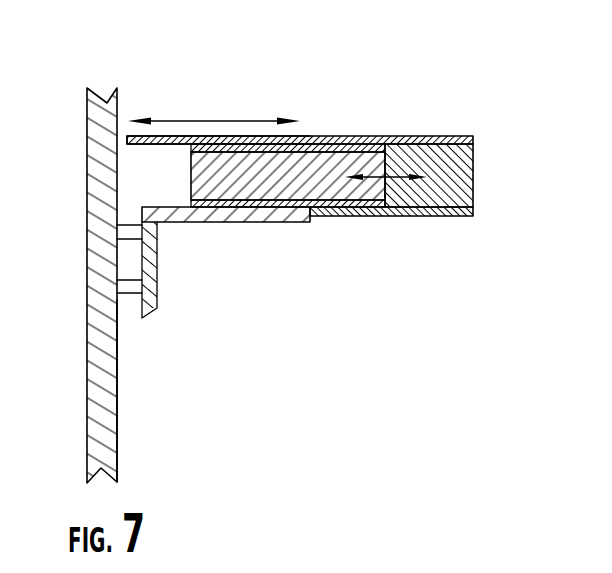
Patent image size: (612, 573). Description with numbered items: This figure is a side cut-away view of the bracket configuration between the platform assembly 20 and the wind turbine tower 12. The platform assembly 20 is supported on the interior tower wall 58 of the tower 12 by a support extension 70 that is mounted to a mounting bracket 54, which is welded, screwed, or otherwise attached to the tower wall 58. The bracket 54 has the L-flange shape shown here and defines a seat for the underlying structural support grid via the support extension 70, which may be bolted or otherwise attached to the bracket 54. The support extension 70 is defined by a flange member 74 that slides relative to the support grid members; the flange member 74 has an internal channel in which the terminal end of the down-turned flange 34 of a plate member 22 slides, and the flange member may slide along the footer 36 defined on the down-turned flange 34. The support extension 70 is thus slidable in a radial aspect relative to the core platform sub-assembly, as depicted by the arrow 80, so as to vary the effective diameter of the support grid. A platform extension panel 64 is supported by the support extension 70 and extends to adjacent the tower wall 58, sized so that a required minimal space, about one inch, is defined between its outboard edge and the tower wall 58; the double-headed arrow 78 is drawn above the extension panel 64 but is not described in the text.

The wind turbine tower 12 is at (87, 173).
The platform assembly 20 is at (337, 163).
The plate member 22 is at (322, 163).
The down-turned flange 34 is at (467, 177).
The footer 36 is at (442, 217).
The mounting bracket 54 is at (157, 257).
The tower wall 58 is at (117, 422).
The platform extension panel 64 is at (159, 136).
The support extension 70 is at (320, 150).
The flange member 74 is at (302, 194).
The sliding direction arrow 78 is at (238, 121).
The arrow 80 is at (408, 178).